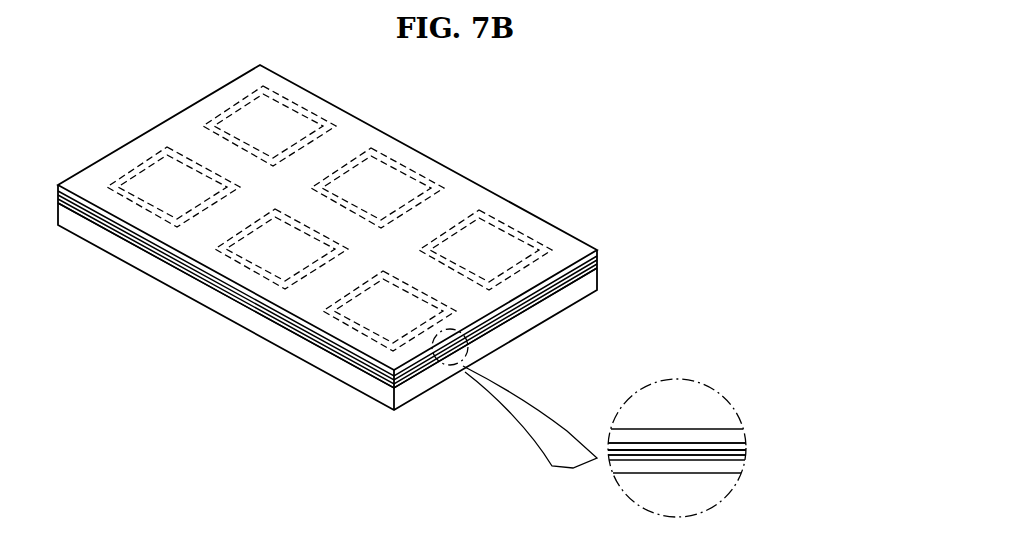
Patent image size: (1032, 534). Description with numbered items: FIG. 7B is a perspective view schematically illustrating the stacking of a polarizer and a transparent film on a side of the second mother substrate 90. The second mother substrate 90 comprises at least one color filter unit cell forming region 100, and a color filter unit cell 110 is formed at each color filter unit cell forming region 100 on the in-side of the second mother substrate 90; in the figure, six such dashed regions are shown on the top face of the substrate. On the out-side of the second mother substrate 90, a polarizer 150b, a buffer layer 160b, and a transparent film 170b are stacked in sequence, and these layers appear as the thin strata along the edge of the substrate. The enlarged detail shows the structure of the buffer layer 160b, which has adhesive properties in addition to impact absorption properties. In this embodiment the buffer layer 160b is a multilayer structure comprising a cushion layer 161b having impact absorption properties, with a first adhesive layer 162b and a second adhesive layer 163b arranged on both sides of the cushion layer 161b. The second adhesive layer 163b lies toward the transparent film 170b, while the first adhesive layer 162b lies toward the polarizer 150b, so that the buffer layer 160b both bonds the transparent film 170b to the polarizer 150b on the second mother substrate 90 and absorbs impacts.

The color filter unit cell forming region 100 is at (143, 160).
The color filter unit cell 110 is at (188, 196).
The transparent film 170b is at (598, 253).
The buffer layer 160b is at (598, 262).
The second adhesive layer 163b is at (745, 443).
The cushion layer 161b is at (745, 450).
The first adhesive layer 162b is at (745, 456).
The polarizer 150b is at (598, 270).
The second mother substrate 90 is at (599, 283).